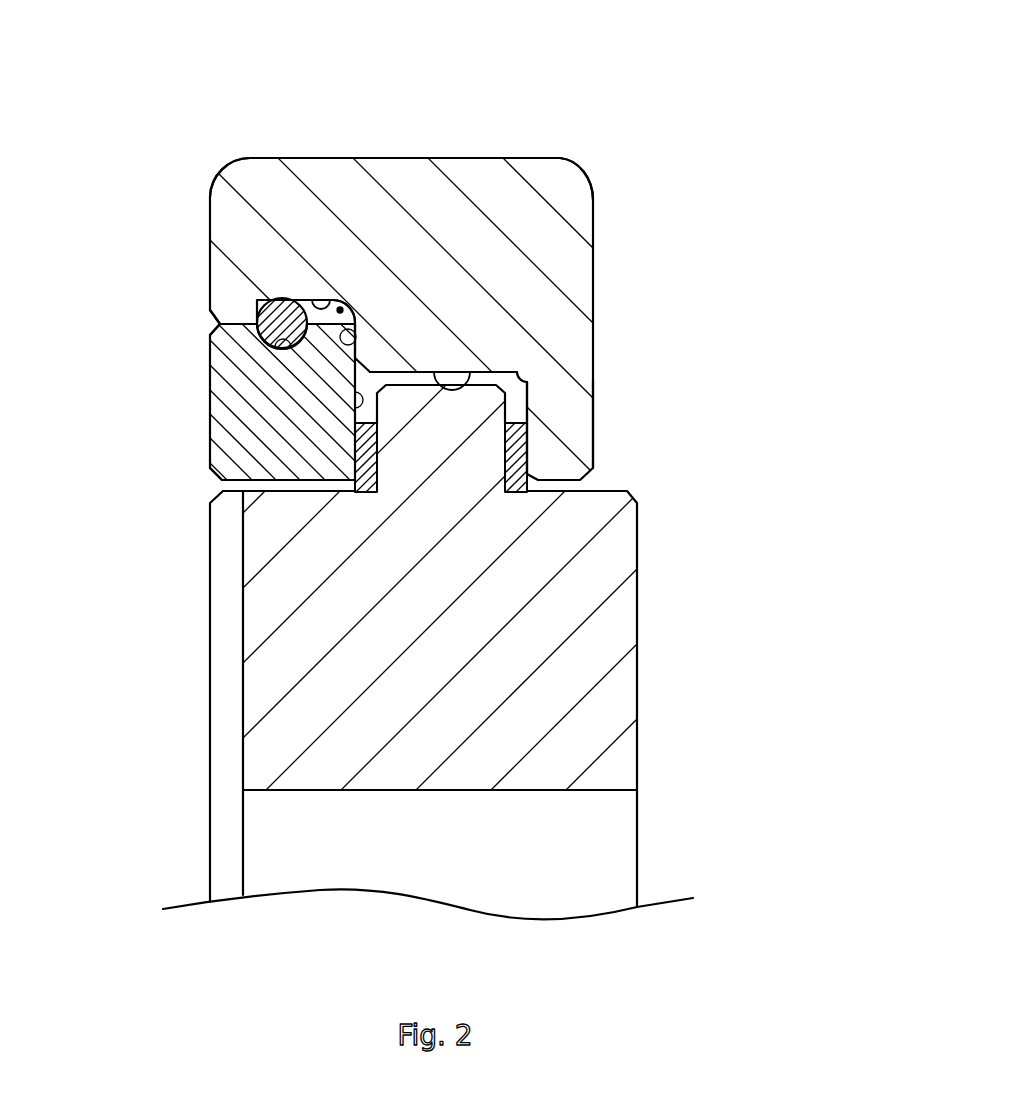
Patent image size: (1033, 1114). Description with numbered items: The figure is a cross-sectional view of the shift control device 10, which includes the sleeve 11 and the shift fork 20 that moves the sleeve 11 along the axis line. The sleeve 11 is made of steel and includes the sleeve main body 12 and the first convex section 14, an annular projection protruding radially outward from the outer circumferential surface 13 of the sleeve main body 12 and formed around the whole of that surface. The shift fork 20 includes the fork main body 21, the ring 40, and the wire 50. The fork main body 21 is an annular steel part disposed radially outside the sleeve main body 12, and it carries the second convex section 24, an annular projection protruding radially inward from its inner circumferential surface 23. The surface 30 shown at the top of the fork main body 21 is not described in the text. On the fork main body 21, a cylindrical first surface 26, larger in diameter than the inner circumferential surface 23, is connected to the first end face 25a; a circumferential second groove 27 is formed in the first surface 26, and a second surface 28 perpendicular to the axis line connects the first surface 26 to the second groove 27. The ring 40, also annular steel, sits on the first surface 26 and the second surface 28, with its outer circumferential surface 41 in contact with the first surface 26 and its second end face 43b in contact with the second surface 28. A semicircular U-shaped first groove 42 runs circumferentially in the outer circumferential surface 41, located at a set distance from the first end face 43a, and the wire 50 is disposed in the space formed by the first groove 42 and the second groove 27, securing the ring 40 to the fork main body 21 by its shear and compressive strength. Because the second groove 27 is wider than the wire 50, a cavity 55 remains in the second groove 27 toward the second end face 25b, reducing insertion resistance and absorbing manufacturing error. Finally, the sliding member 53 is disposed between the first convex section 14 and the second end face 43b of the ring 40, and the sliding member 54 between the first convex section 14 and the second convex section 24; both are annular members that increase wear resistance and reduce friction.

The shift control device 10 is at (643, 100).
The sleeve 11 is at (687, 742).
The sleeve main body 12 is at (613, 632).
The outer circumferential surface 13 is at (613, 491).
The first convex section 14 is at (560, 388).
The shift fork 20 is at (633, 197).
The fork main body 21 is at (573, 270).
The inner circumferential surface 23 is at (474, 373).
The second convex section 24 is at (573, 418).
The first end face 25a is at (210, 212).
The second end face 25b is at (595, 216).
The first surface 26 is at (228, 325).
The second groove 27 is at (322, 300).
The second surface 28 is at (356, 323).
The outer peripheral surface 30 is at (388, 158).
The ring 40 is at (211, 437).
The outer circumferential surface 41 is at (255, 322).
The first groove 42 is at (292, 352).
The first end face 43a is at (210, 470).
The second end face 43b is at (357, 412).
The wire 50 is at (265, 343).
The sliding member 53 is at (362, 484).
The sliding member 54 is at (514, 484).
The cavity 55 is at (340, 308).